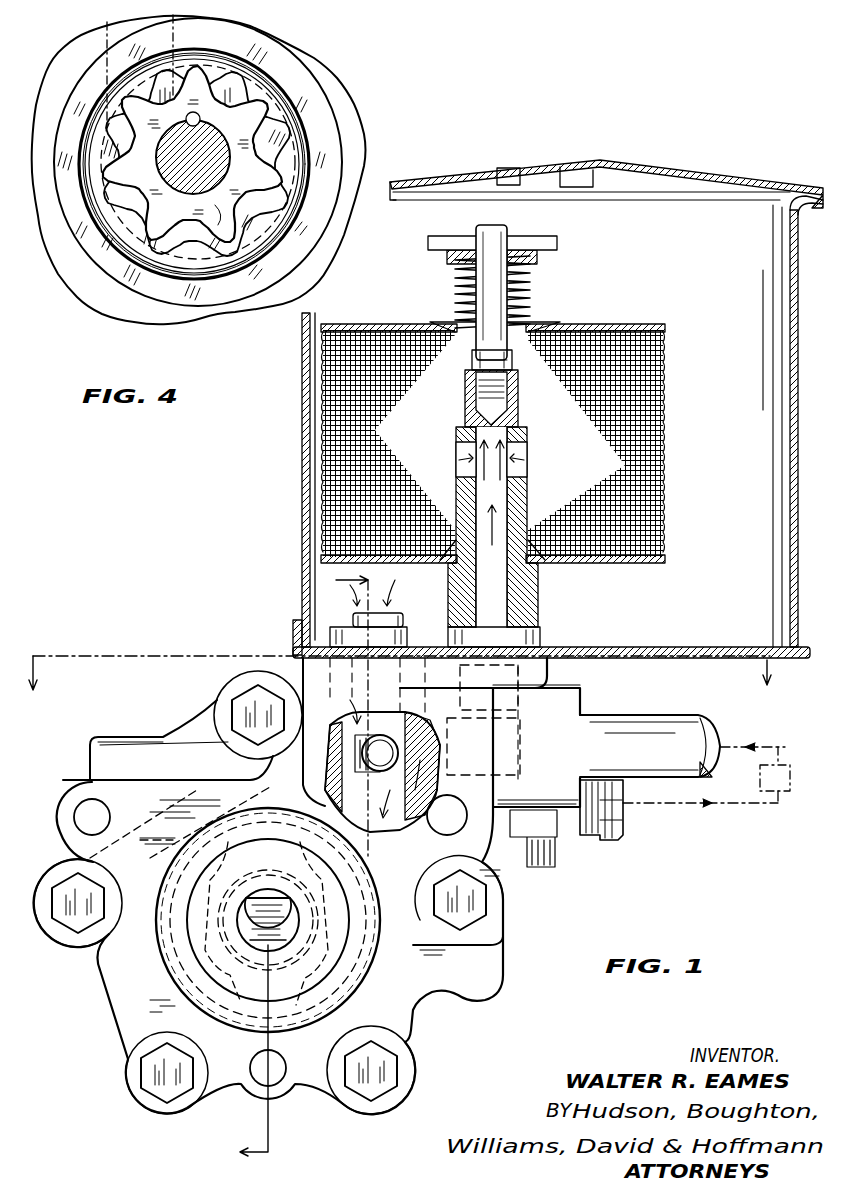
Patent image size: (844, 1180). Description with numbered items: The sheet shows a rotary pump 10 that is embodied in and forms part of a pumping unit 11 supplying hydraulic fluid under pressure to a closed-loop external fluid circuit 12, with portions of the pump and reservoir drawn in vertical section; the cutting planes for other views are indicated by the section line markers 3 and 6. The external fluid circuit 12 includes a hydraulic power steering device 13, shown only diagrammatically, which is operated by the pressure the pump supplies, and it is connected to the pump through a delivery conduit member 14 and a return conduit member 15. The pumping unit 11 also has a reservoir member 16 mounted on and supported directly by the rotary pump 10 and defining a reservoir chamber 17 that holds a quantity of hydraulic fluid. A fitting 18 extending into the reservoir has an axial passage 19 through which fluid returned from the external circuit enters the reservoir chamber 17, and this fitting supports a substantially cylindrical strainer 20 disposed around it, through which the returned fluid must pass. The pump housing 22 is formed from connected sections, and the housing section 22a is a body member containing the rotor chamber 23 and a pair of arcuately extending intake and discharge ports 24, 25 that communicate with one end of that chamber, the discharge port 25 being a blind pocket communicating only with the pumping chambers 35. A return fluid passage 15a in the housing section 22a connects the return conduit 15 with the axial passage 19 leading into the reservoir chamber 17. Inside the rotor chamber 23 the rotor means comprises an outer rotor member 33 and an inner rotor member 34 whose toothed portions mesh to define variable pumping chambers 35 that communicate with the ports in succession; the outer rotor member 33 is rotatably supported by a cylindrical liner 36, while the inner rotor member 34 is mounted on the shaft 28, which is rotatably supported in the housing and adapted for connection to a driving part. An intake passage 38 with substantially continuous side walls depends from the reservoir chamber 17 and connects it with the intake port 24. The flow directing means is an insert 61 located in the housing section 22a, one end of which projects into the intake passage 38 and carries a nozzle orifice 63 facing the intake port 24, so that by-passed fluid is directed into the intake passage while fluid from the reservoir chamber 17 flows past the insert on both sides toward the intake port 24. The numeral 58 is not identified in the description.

In FIG. 1, the rotary pump 10 is at (413, 1008).
In FIG. 1, the pumping unit 11 is at (162, 734).
In FIG. 1, the external fluid circuit 12 is at (745, 808).
In FIG. 1, the hydraulic power steering device 13 is at (785, 773).
In FIG. 1, the delivery conduit member 14 is at (615, 830).
In FIG. 1, the return conduit member 15 is at (660, 722).
In FIG. 1, the return fluid passage 15a is at (505, 700).
In FIG. 1, the reservoir member 16 is at (302, 518).
In FIG. 1, the reservoir chamber 17 is at (322, 612).
In FIG. 1, the fitting 18 is at (540, 636).
In FIG. 1, the axial passage 19 is at (500, 605).
In FIG. 1, the strainer 20 is at (655, 480).
In FIG. 1, the pump housing 22 is at (135, 1003).
In FIG. 4, the housing section 22a is at (75, 278).
In FIG. 1, the housing section 22a is at (150, 1015).
In FIG. 4, the rotor chamber 23 is at (290, 84).
In FIG. 4, the intake port 24 is at (95, 70).
In FIG. 1, the intake port 24 is at (400, 822).
In FIG. 4, the discharge port 25 is at (248, 52).
In FIG. 1, the discharge port 25 is at (268, 917).
In FIG. 4, the shaft 28 is at (226, 178).
In FIG. 1, the shaft 28 is at (262, 945).
In FIG. 4, the outer rotor member 33 is at (165, 265).
In FIG. 4, the inner rotor member 34 is at (210, 243).
In FIG. 4, the pumping chambers 35 is at (262, 180).
In FIG. 4, the cylindrical liner 36 is at (296, 118).
In FIG. 1, the intake passage 38 is at (387, 762).
In FIG. 4, the section plane 58 is at (98, 45).
In FIG. 1, the insert 61 is at (345, 750).
In FIG. 1, the nozzle orifice 63 is at (405, 752).
In FIG. 1, the section line 3- 3 is at (293, 868).
In FIG. 1, the section line 6- 6 is at (395, 690).